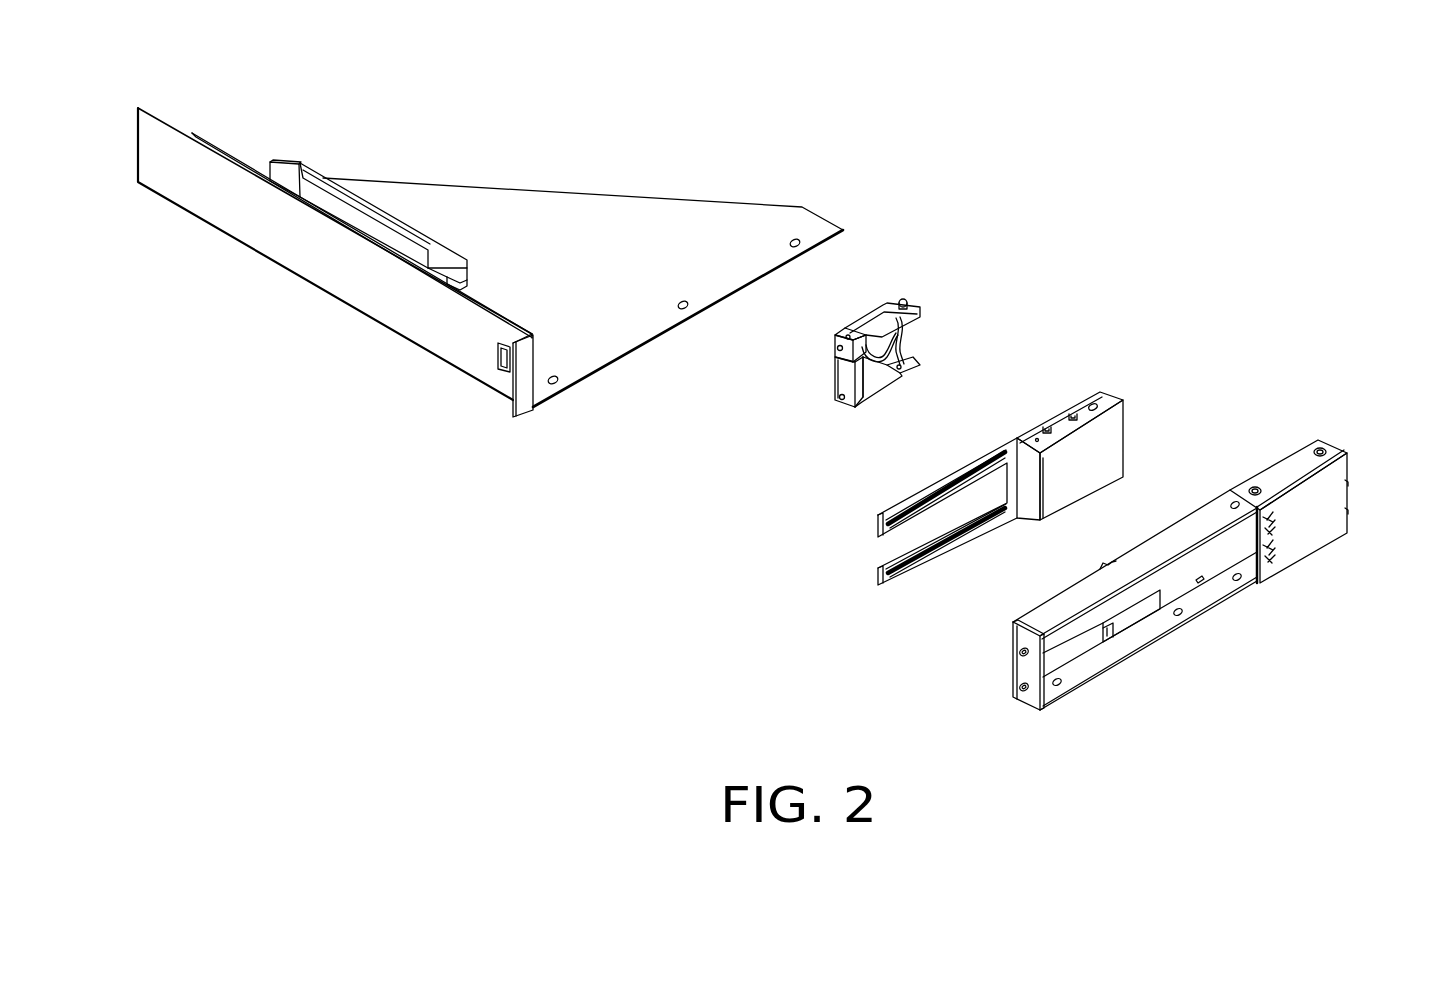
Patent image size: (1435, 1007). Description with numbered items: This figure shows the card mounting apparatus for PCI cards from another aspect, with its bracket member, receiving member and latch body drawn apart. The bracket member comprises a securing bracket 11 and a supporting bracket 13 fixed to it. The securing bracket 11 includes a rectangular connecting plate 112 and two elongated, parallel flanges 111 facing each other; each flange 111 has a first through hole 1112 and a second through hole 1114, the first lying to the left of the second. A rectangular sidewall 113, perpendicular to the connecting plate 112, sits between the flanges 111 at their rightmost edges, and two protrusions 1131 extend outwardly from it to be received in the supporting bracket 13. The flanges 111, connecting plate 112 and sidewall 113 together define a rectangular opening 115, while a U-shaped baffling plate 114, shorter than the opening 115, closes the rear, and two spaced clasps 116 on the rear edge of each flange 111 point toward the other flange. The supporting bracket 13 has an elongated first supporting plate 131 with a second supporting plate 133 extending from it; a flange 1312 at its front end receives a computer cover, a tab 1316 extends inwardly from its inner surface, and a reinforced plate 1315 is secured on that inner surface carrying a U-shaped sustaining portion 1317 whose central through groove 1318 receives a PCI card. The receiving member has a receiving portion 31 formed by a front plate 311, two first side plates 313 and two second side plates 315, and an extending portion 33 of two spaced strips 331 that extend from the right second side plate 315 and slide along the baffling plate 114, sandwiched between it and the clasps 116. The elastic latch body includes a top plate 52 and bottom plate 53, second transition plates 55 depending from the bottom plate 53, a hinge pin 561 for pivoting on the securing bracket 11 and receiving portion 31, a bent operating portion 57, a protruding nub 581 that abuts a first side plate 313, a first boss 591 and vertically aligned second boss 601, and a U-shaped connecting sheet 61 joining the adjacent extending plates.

The securing bracket 11 is at (1337, 557).
The flanges 111 is at (1200, 528).
The connecting plate 112 is at (1298, 543).
The sidewall 113 is at (1011, 633).
The protrusions 1131 is at (1011, 690).
The baffling plate 114 is at (1130, 618).
The opening 115 is at (1180, 580).
The clasps 116 is at (1105, 562).
The first through hole 1112 is at (1322, 448).
The second through hole 1114 is at (1254, 486).
The supporting bracket 13 is at (609, 150).
The first supporting plate 131 is at (298, 248).
The flange 1312 is at (522, 382).
The reinforced plate 1315 is at (355, 220).
The tab 1316 is at (498, 348).
The sustaining portion 1317 is at (410, 235).
The through groove 1318 is at (468, 275).
The second supporting plate 133 is at (682, 227).
The receiving portion 31 is at (1108, 395).
The front plate 311 is at (1112, 430).
The first side plates 313 is at (1076, 404).
The second side plates 315 is at (1030, 505).
The extending portion 33 is at (800, 515).
The strips 331 is at (878, 523).
The top plate 52 is at (861, 323).
The bottom plate 53 is at (875, 382).
The second transition plates 55 is at (862, 398).
The hinge pin 561 is at (907, 298).
The operating portion 57 is at (903, 341).
The protruding nub 581 is at (845, 333).
The first boss 591 is at (836, 349).
The second boss 601 is at (840, 401).
The connecting sheet 61 is at (912, 367).